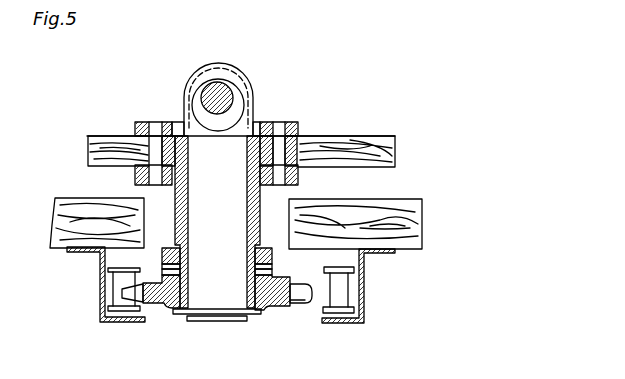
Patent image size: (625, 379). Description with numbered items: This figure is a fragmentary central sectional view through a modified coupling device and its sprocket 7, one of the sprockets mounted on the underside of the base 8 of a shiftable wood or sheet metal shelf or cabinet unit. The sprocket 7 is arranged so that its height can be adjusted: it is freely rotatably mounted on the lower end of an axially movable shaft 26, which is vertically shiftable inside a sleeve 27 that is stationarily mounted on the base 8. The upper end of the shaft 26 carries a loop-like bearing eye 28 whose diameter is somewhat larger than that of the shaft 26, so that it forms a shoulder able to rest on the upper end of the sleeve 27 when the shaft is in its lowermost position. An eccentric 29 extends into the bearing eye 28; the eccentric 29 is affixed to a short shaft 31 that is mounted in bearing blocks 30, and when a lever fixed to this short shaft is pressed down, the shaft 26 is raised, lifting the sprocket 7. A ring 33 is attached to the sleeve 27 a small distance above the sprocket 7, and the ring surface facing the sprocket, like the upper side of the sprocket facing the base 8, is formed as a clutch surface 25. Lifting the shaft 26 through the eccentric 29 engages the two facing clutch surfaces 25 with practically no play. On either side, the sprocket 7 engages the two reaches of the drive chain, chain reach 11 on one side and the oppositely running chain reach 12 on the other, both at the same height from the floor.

The sprocket 7 is at (269, 308).
The base 8 is at (332, 149).
The chain reach 11 is at (118, 299).
The chain reach 12 is at (340, 298).
The clutch surface 25 is at (153, 327).
The shaft 26 is at (215, 298).
The sleeve 27 is at (250, 210).
The bearing eye 28 is at (249, 85).
The eccentric 29 is at (228, 117).
The bearing blocks 30 is at (146, 123).
The short shaft 31 is at (202, 96).
The ring 33 is at (268, 256).